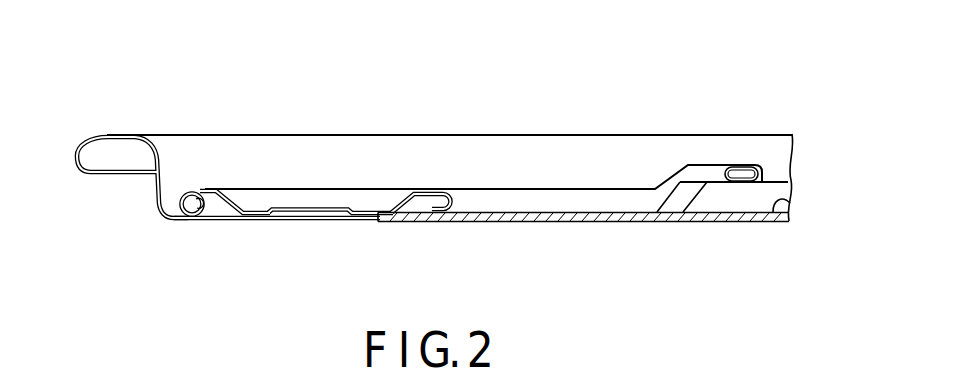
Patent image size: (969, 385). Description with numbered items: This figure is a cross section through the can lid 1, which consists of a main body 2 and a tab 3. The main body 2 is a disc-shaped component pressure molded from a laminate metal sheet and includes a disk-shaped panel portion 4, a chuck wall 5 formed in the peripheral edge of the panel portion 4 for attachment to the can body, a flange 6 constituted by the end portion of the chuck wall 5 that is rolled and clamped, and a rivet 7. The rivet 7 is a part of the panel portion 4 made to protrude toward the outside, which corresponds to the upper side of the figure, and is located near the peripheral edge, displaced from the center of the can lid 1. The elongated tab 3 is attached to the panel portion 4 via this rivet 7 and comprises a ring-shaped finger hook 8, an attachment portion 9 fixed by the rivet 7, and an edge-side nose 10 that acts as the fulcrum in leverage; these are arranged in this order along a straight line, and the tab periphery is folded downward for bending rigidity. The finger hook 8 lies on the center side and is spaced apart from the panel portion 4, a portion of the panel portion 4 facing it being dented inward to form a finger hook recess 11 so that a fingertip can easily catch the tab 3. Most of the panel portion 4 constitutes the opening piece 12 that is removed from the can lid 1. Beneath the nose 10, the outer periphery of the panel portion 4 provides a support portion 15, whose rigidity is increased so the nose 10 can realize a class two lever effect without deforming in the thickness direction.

The can lid 1 is at (730, 100).
The main body 2 is at (793, 142).
The tab 3 is at (615, 188).
The panel portion 4 is at (722, 223).
The chuck wall 5 is at (158, 153).
The flange 6 is at (77, 152).
The rivet 7 is at (320, 208).
The finger hook 8 is at (760, 172).
The attachment portion 9 is at (377, 211).
The nose 10 is at (179, 193).
The finger hook recess 11 is at (784, 200).
The opening piece 12 is at (558, 222).
The support portion 15 is at (187, 218).